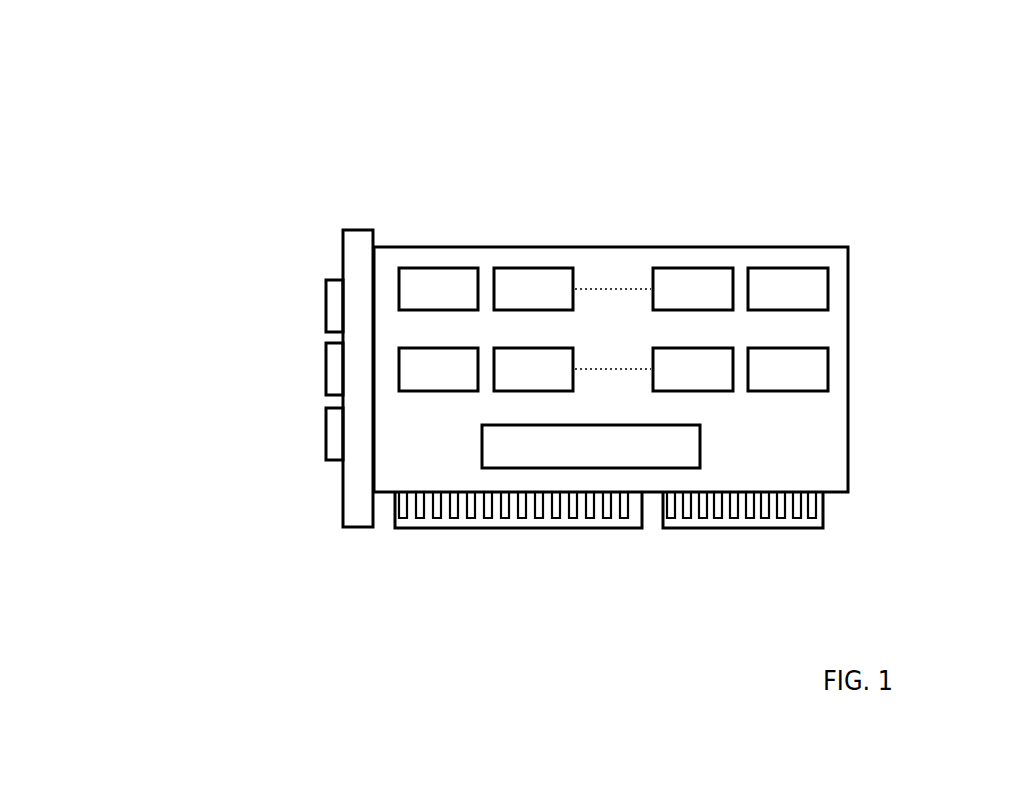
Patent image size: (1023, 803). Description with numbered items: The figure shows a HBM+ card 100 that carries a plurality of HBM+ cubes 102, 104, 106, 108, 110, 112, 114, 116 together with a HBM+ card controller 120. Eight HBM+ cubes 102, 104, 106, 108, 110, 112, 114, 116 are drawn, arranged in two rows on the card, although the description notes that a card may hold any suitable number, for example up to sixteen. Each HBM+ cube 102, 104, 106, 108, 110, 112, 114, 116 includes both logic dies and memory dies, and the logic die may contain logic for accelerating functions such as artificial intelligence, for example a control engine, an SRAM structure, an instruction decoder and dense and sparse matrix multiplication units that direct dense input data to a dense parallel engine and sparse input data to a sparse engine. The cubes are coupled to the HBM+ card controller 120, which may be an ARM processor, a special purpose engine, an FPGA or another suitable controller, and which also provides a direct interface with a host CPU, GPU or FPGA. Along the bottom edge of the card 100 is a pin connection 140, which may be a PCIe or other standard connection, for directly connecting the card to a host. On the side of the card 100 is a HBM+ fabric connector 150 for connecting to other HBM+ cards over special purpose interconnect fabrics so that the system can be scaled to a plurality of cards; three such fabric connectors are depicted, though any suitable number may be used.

The HBM+ card 100 is at (915, 128).
The HBM+ cube 102 is at (467, 268).
The HBM+ cube 104 is at (562, 268).
The HBM+ cube 106 is at (722, 268).
The HBM+ cube 108 is at (822, 268).
The HBM+ cube 110 is at (448, 392).
The HBM+ cube 112 is at (499, 392).
The HBM+ cube 114 is at (722, 391).
The HBM+ cube 116 is at (826, 391).
The HBM+ card controller 120 is at (700, 448).
The pin connection 140 is at (555, 555).
The HBM+ fabric connector 150 is at (282, 398).